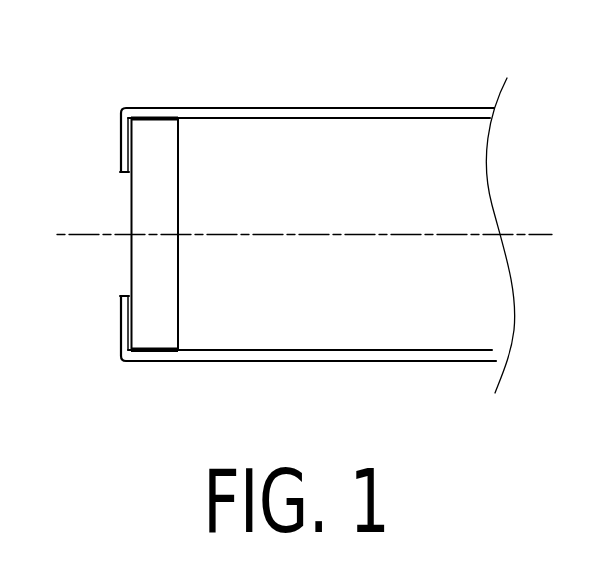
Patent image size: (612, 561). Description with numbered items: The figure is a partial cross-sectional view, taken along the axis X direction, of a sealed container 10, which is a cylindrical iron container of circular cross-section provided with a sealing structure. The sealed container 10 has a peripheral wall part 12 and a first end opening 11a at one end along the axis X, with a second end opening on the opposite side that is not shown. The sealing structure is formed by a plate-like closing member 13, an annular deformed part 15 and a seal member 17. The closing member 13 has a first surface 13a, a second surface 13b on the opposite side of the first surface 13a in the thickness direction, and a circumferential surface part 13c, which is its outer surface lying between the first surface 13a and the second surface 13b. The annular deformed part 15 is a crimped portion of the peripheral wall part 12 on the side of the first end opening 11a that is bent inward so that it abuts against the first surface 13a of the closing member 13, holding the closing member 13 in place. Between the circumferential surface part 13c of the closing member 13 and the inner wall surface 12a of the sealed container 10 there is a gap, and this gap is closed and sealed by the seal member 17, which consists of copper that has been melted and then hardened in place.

The sealed container 10 is at (346, 100).
The first end opening 11a is at (128, 174).
The peripheral wall part 12 is at (233, 108).
The inner wall surface 12a is at (372, 120).
The closing member 13 is at (151, 233).
The first surface 13a is at (129, 272).
The second surface 13b is at (179, 175).
The circumferential surface part 13c is at (159, 337).
The annular deformed part 15 is at (119, 147).
The seal member 17 is at (144, 117).
The axis X is at (315, 238).